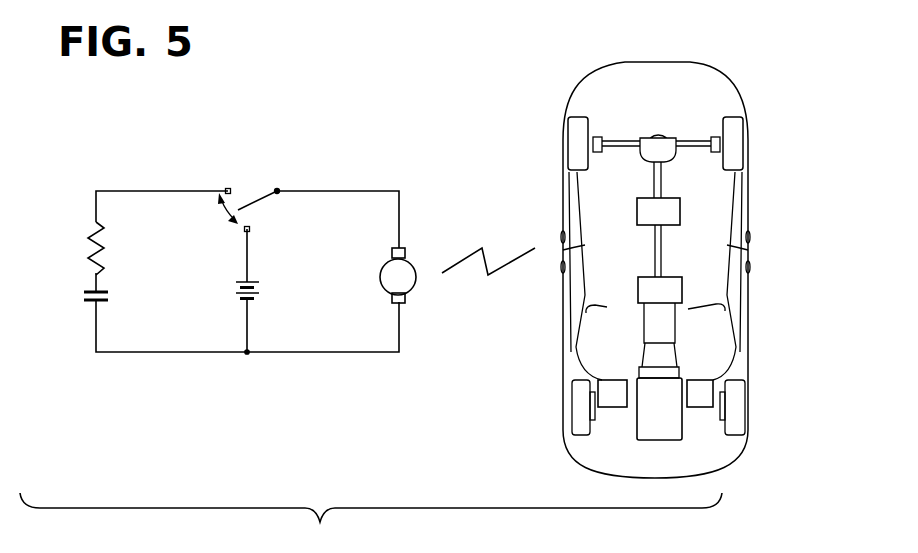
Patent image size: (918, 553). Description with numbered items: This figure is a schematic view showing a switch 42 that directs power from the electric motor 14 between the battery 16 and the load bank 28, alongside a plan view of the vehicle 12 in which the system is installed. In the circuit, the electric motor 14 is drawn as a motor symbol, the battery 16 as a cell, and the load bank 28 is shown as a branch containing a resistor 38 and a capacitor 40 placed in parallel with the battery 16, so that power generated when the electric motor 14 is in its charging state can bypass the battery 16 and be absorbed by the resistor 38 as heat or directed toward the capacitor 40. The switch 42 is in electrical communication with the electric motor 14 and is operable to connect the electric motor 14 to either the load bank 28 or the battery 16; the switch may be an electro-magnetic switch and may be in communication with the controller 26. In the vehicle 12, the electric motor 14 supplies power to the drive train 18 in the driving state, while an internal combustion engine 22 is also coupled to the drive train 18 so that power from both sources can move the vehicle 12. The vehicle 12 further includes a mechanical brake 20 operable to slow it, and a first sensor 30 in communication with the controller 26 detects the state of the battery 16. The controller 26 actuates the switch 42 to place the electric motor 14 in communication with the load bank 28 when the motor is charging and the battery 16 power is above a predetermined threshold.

The vehicle 12 is at (578, 48).
The electric motor 14 is at (418, 277).
The battery 16 is at (260, 292).
The drive train 18 is at (680, 213).
The mechanical brake 20 is at (710, 138).
The internal combustion engine 22 is at (682, 290).
The controller 26 is at (598, 407).
The load bank 28 is at (64, 211).
The first sensor 30 is at (700, 393).
The resistor 38 is at (88, 253).
The capacitor 40 is at (84, 296).
The switch 42 is at (252, 199).